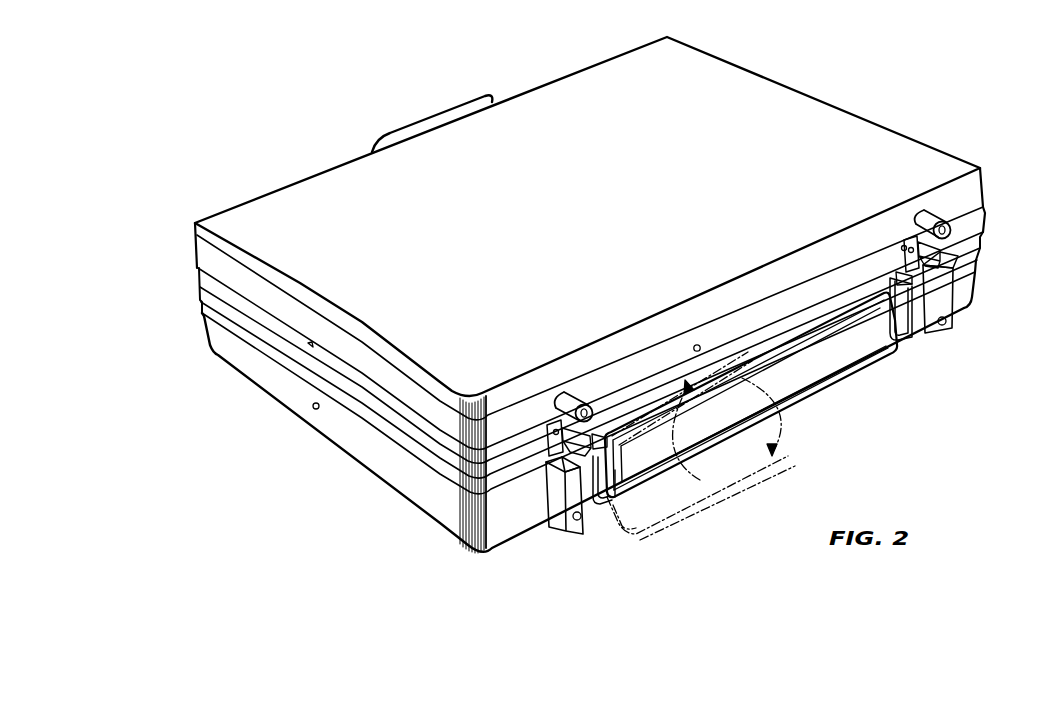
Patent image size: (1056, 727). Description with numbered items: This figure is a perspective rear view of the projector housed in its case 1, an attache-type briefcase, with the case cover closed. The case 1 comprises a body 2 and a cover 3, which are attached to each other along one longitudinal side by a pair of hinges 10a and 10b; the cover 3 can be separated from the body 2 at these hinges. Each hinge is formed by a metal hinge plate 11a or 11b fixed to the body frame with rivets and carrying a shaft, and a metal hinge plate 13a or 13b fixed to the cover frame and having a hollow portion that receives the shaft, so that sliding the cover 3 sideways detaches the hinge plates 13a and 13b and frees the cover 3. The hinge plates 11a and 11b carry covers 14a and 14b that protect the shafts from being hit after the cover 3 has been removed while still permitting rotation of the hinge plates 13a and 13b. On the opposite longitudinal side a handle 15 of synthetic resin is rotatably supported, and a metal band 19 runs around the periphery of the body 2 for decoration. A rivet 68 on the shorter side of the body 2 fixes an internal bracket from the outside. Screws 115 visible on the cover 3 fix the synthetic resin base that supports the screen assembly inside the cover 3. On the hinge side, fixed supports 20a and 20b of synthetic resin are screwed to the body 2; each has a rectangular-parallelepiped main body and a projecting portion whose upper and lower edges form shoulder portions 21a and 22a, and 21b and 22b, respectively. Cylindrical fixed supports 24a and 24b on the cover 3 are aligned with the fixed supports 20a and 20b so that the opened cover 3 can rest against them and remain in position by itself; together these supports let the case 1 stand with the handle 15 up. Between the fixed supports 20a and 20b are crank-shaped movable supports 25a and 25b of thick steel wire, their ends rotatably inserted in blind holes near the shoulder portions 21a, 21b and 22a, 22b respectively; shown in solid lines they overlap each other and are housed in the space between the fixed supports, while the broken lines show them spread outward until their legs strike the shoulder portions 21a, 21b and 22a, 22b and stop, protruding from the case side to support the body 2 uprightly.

The case 1 is at (797, 75).
The body 2 is at (229, 367).
The cover 3 is at (263, 220).
The handle 15 is at (436, 112).
The metal band 19 is at (197, 310).
The rivet 68 is at (313, 411).
The screws 115 is at (699, 344).
The hinge 10a is at (951, 237).
The hinge 10b is at (599, 412).
The hinge plate 11a is at (906, 257).
The hinge plate 11b is at (547, 450).
The hinge plate 13a is at (911, 238).
The hinge plate 13b is at (549, 423).
The cover 14a is at (957, 258).
The cover 14b is at (548, 462).
The fixed support 20a is at (957, 317).
The fixed support 20b is at (562, 531).
The shoulder portion 21a is at (896, 278).
The shoulder portion 21b is at (609, 430).
The shoulder portion 22a is at (907, 342).
The shoulder portion 22b is at (598, 512).
The fixed support 24a is at (935, 205).
The fixed support 24b is at (570, 392).
The movable support 25a is at (808, 392).
The movable support 25b is at (791, 348).